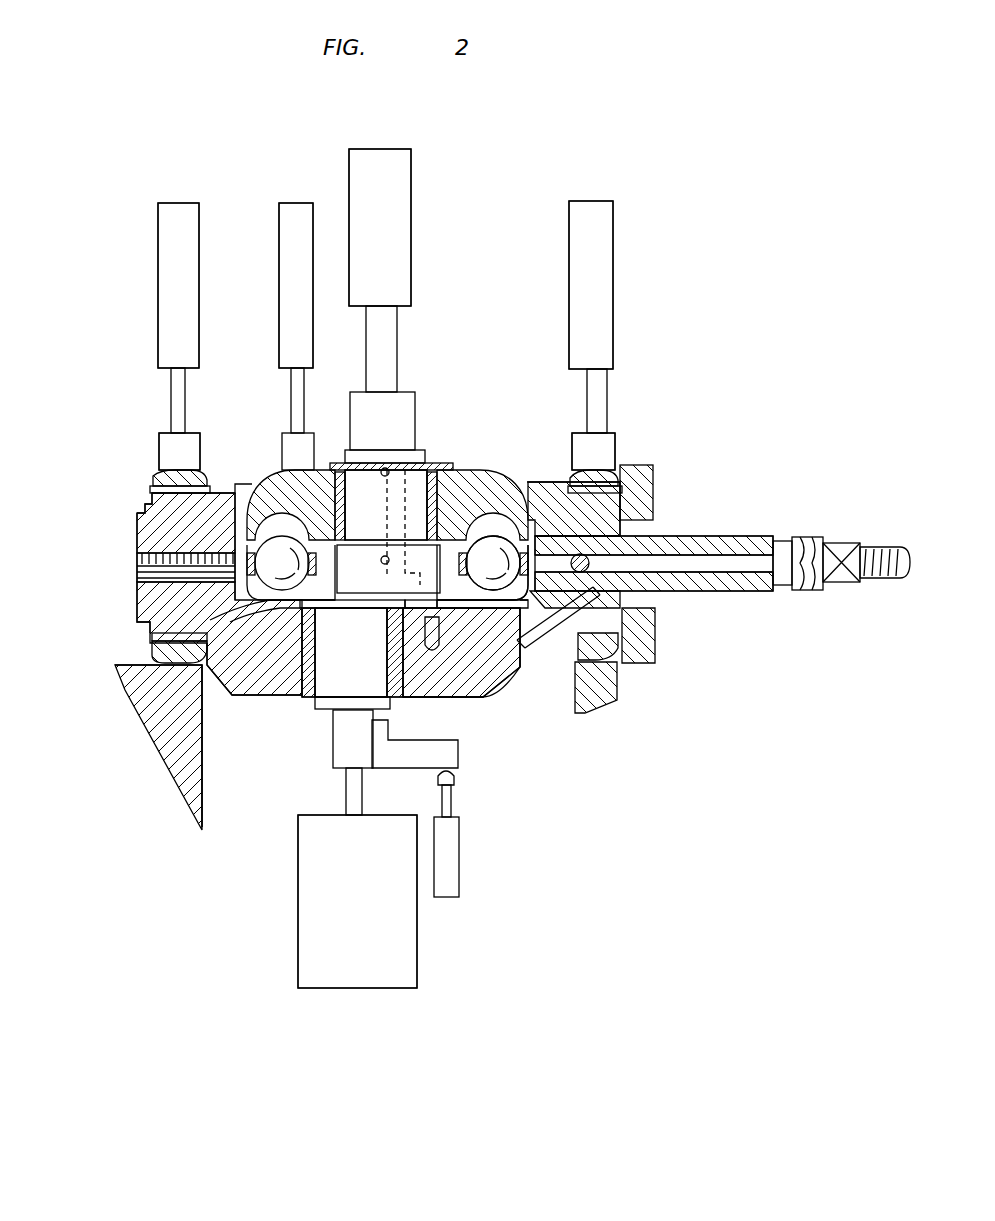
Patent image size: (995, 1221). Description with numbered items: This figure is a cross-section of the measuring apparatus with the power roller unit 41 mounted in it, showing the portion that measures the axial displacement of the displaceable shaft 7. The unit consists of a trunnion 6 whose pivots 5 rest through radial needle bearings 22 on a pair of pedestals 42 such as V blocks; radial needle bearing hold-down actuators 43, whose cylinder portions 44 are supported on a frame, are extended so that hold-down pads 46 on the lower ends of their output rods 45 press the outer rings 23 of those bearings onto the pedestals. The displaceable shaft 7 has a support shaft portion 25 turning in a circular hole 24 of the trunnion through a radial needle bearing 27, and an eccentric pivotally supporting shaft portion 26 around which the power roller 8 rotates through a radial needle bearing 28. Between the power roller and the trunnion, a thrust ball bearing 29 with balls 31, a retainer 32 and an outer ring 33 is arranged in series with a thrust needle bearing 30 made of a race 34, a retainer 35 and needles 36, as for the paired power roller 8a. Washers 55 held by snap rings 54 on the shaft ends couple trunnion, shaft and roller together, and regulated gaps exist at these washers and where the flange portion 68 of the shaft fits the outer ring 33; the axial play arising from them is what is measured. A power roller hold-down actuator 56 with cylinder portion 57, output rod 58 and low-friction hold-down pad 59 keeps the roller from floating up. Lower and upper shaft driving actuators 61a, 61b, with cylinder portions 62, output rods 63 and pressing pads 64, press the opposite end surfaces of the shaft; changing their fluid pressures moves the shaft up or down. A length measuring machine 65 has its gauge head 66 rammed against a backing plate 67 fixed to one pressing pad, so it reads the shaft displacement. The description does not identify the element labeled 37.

The pivot 5 is at (145, 543).
The trunnion 6 is at (214, 700).
The displaceable shaft 7 is at (360, 750).
The power roller 8 is at (473, 482).
The power roller 8a is at (516, 500).
The radial needle bearing 22 is at (172, 488).
The outer ring 23 is at (200, 452).
The circular hole 24 is at (327, 690).
The support shaft portion 25 is at (337, 690).
The pivotally supporting shaft portion 26 is at (366, 477).
The radial needle bearing 27 is at (440, 650).
The radial needle bearing 28 is at (410, 510).
The thrust ball bearing 29 is at (530, 640).
The thrust needle bearing 30 is at (260, 675).
The ball 31 is at (271, 510).
The retainer 32 is at (240, 565).
The outer ring 33 is at (262, 586).
The race 34 is at (480, 650).
The retainer 35 is at (460, 700).
The needle 36 is at (286, 655).
The shaft 37 is at (768, 580).
The power roller unit 41 is at (662, 465).
The pedestal 42 is at (160, 716).
The radial needle bearing hold-down actuator 43 is at (170, 246).
The cylinder portion 44 is at (175, 212).
The output rod 45 is at (178, 372).
The hold-down pad 46 is at (185, 440).
The snap ring 54 is at (338, 500).
The washer 55 is at (440, 498).
The power roller hold-down actuator 56 is at (293, 235).
The cylinder portion 57 is at (294, 212).
The output rod 58 is at (296, 418).
The hold-down pad 59 is at (302, 440).
The lower shaft driving actuator 61a is at (343, 970).
The upper shaft driving actuator 61b is at (405, 195).
The cylinder portion 62 is at (385, 160).
The output rod 63 is at (395, 333).
The pressing pad 64 is at (395, 413).
The length measuring machine 65 is at (459, 866).
The gauge head 66 is at (452, 795).
The backing plate 67 is at (456, 775).
The flange portion 68 is at (300, 603).